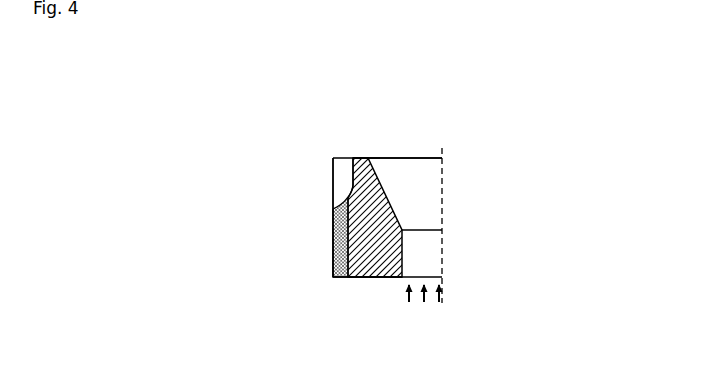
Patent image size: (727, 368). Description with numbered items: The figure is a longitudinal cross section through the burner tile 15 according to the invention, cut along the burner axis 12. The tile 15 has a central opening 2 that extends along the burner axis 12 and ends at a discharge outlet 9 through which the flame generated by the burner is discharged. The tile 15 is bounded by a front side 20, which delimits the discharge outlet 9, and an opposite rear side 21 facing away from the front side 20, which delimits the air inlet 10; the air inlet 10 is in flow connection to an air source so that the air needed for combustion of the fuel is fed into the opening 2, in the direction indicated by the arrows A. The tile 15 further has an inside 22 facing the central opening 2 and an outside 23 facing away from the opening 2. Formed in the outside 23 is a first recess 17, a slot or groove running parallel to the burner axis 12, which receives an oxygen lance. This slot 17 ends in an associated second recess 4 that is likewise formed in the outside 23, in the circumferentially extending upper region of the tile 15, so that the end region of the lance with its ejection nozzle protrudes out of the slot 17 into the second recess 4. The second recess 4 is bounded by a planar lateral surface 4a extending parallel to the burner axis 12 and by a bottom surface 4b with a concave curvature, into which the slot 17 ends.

The central opening 2 is at (440, 253).
The second recess 4 is at (329, 172).
The planar lateral surface 4a is at (333, 173).
The bottom surface 4b is at (333, 203).
The discharge outlet 9 is at (402, 157).
The air inlet 10 is at (408, 285).
The burner axis 12 is at (442, 210).
The tile 15 is at (357, 150).
The first recess 17 is at (326, 221).
The front side 20 is at (365, 158).
The rear side 21 is at (375, 277).
The inside 22 is at (405, 243).
The outside 23 is at (333, 245).
The direction A is at (428, 325).